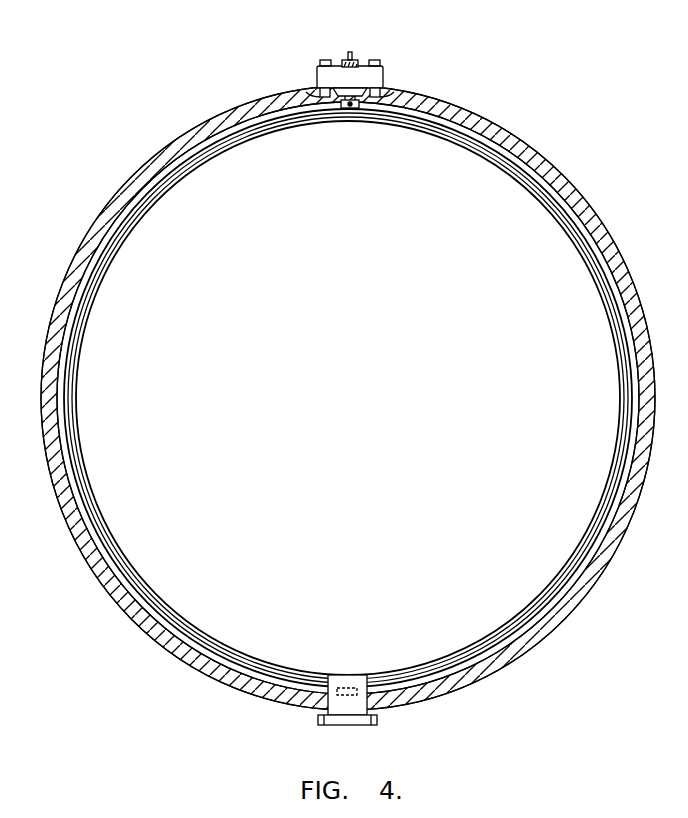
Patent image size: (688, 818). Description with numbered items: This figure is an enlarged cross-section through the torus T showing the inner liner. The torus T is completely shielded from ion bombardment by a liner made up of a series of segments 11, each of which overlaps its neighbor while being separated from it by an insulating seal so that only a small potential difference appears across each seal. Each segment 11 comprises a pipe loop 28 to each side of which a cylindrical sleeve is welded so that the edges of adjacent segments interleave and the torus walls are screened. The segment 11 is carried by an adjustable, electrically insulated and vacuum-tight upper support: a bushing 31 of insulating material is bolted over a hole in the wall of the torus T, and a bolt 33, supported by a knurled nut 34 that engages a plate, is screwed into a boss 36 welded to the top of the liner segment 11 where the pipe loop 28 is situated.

The torus T is at (105, 210).
The liner segment 11 is at (348, 395).
The pipe loop 28 is at (79, 395).
The bushing 31 is at (323, 78).
The bolt 33 is at (351, 52).
The knurled nut 34 is at (356, 60).
The boss 36 is at (352, 108).